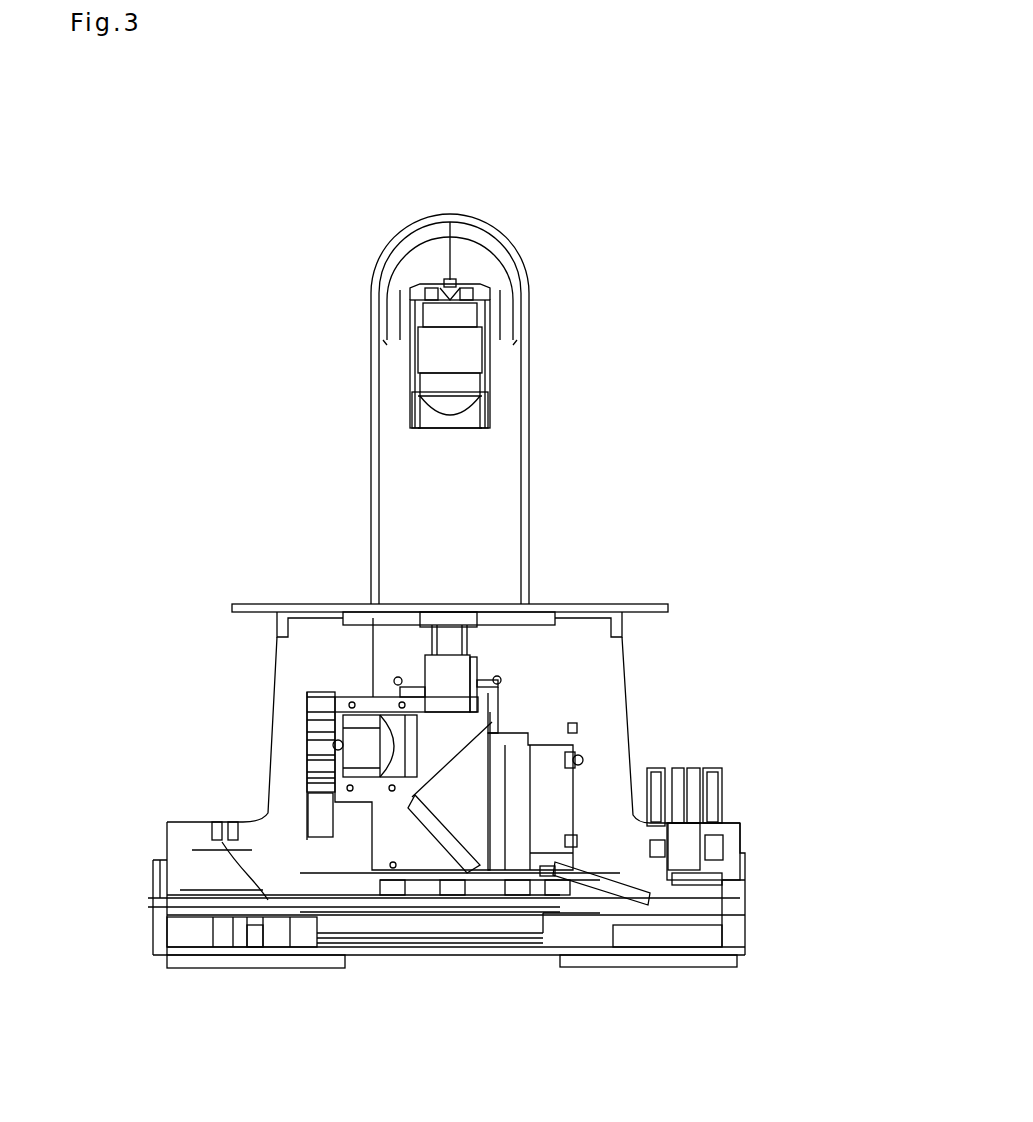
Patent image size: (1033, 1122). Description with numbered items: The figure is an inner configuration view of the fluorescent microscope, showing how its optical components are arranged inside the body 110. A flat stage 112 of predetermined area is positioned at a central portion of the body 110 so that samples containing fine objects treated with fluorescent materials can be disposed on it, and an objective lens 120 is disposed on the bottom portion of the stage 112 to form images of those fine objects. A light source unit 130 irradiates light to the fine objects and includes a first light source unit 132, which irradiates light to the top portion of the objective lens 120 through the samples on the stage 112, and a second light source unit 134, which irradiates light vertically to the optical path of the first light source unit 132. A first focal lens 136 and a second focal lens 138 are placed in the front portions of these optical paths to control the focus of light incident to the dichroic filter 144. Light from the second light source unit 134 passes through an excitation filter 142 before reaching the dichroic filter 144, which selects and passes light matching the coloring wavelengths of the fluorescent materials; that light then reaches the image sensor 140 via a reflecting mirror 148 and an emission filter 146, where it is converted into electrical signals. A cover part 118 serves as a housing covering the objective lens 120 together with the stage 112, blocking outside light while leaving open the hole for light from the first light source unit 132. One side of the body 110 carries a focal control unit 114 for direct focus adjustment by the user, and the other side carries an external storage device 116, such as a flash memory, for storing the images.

The body 110 is at (553, 205).
The stage 112 is at (640, 603).
The focal control unit 114 is at (722, 788).
The external storage device 116 is at (168, 908).
The cover part 118 is at (627, 712).
The objective lens 120 is at (470, 672).
The light source unit 130 is at (246, 318).
The first light source unit 132 is at (436, 357).
The second light source unit 134 is at (338, 745).
The first focal lens 136 is at (455, 410).
The second focal lens 138 is at (387, 748).
The image sensor 140 is at (550, 840).
The excitation filter 142 is at (397, 797).
The dichroic filter 144 is at (476, 790).
The emission filter 146 is at (494, 855).
The reflecting mirror 148 is at (400, 760).